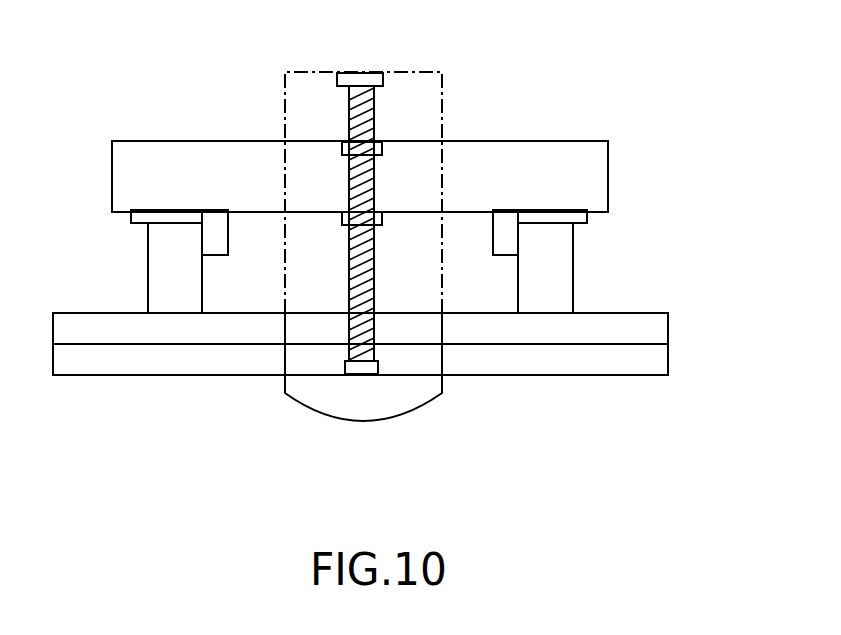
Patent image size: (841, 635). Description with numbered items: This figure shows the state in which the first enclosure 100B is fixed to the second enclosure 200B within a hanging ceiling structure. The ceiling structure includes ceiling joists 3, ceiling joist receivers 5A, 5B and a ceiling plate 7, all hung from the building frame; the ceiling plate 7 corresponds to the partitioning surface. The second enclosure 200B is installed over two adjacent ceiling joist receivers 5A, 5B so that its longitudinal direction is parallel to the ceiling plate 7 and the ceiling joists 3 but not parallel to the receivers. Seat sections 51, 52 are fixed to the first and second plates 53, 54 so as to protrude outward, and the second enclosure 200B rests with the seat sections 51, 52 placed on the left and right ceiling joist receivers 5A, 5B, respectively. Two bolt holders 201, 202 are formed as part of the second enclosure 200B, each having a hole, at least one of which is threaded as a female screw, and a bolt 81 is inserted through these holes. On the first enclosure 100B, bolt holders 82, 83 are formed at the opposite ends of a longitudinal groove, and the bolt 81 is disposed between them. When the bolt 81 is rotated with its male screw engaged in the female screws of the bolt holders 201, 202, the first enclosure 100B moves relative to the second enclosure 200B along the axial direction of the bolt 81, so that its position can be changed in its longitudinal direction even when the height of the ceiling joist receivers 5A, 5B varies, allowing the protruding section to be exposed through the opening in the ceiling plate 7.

The first enclosure 100B is at (310, 71).
The second enclosure 200B is at (540, 140).
The bolt holder 82 is at (378, 78).
The bolt 81 is at (367, 107).
The bolt holder 201 is at (373, 147).
The bolt holder 202 is at (347, 218).
The bolt holder 83 is at (353, 375).
The seat section 51 is at (132, 222).
The seat section 52 is at (588, 222).
The first plate 53 is at (220, 243).
The second plate 54 is at (497, 250).
The ceiling joist receiver 5A is at (157, 281).
The ceiling joist receiver 5B is at (563, 285).
The ceiling joist 3 is at (660, 330).
The ceiling plate 7 is at (660, 363).